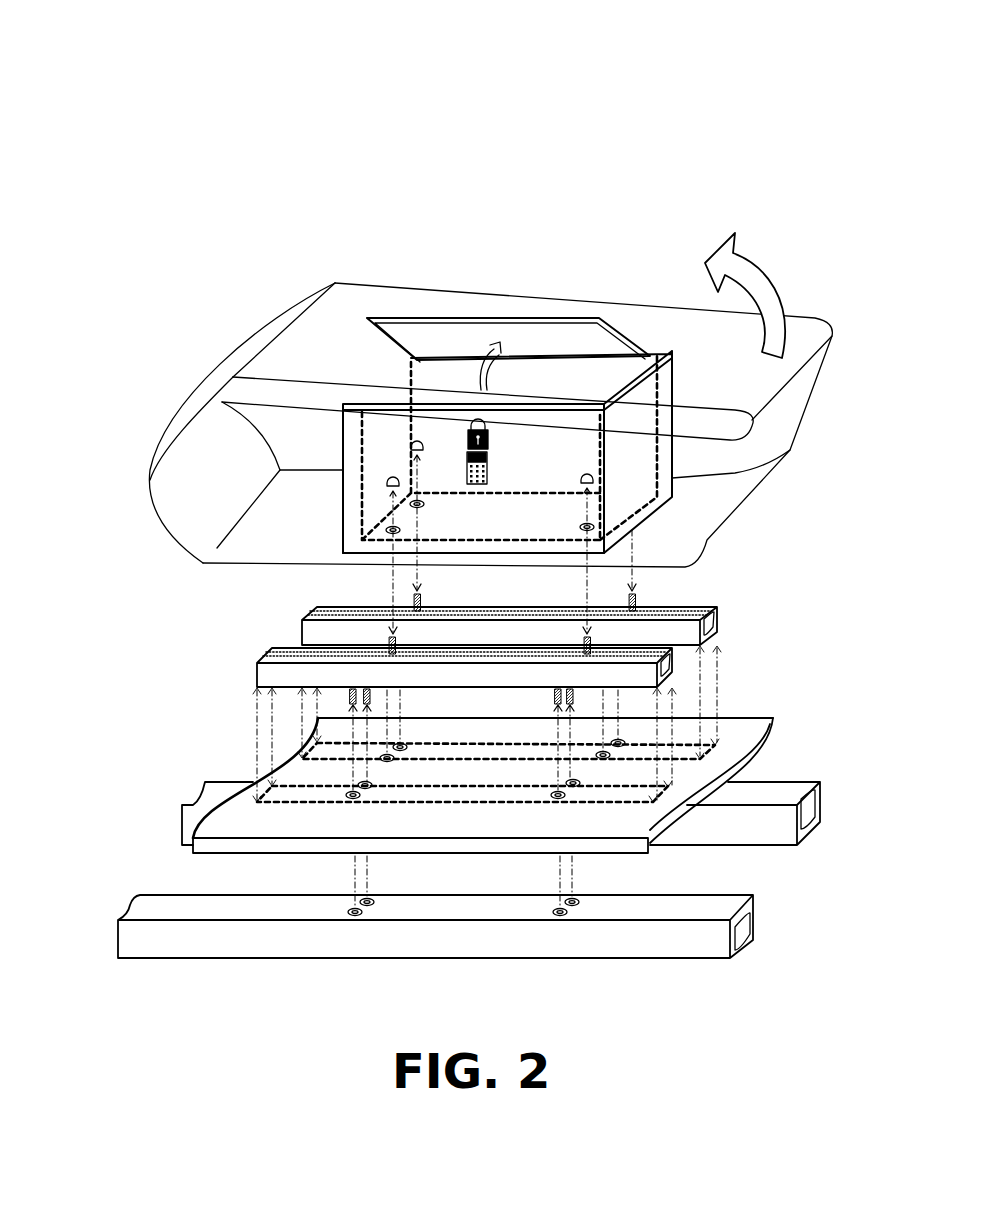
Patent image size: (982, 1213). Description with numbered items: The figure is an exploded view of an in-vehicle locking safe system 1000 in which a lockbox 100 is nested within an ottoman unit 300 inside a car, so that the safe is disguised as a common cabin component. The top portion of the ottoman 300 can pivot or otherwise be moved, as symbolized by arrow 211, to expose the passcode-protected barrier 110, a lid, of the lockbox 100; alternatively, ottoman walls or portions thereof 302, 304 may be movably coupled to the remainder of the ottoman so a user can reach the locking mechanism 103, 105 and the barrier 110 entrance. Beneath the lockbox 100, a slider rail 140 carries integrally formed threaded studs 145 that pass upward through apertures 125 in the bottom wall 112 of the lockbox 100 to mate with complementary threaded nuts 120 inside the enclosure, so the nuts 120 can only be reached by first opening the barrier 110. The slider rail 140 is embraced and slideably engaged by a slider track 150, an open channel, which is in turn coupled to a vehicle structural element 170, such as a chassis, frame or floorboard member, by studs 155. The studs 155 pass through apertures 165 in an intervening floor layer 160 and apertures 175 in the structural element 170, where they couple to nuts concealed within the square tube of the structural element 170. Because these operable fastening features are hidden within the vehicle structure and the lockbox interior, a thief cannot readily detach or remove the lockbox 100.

The in-vehicle locking safe system 1000 is at (567, 92).
The lockbox 100 is at (622, 504).
The locking mechanism 103 is at (490, 420).
The locking mechanism 105 is at (485, 458).
The barrier 110 is at (397, 354).
The bottom wall 112 is at (480, 573).
The nut 120 is at (380, 486).
The aperture 125 is at (380, 530).
The slider rail 140 is at (277, 650).
The stud 145 is at (384, 636).
The slider track 150 is at (267, 673).
The stud 155 is at (347, 700).
The floor layer 160 is at (227, 832).
The aperture 165 is at (313, 740).
The vehicle structural element 170 is at (153, 908).
The aperture 175 is at (347, 907).
The arrow 211 is at (777, 273).
The ottoman unit 300 is at (453, 302).
The ottoman wall 302 is at (293, 327).
The ottoman wall 304 is at (168, 532).